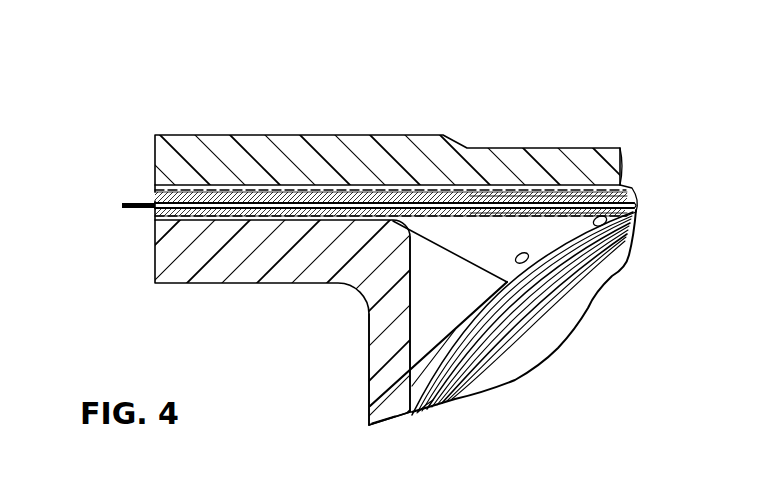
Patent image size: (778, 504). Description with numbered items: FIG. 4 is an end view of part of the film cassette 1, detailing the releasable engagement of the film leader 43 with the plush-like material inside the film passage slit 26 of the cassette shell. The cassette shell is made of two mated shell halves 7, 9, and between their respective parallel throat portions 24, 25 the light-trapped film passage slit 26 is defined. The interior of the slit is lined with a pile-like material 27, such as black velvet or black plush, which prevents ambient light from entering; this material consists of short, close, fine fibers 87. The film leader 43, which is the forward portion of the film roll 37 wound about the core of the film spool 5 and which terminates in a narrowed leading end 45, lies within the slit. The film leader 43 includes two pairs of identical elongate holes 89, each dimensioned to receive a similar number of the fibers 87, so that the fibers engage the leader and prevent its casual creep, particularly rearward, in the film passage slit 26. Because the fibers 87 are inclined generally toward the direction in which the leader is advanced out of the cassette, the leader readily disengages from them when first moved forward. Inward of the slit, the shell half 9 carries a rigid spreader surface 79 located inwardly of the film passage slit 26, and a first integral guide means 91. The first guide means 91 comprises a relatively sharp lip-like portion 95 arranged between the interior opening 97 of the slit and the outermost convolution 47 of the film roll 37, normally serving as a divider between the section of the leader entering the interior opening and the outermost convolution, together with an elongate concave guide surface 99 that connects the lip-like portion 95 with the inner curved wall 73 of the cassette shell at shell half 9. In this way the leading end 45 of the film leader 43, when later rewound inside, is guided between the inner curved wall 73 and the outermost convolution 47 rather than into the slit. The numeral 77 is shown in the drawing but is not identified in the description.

The film cassette 1 is at (377, 116).
The film spool 5 is at (460, 331).
The shell half 7 is at (593, 148).
The shell half 9 is at (368, 424).
The throat portion 24 is at (285, 134).
The throat portion 25 is at (210, 270).
The film passage slit 26 is at (153, 209).
The pile-like material 27 is at (173, 190).
The film roll 37 is at (450, 362).
The film leader 43 is at (540, 206).
The leading end 45 is at (128, 203).
The outermost convolution 47 is at (625, 264).
The inner curved wall 73 is at (370, 407).
The junction 77 is at (432, 402).
The spreader surface 79 is at (451, 295).
The fibers 87 is at (174, 220).
The elongate holes 89 is at (236, 190).
The first guide means 91 is at (491, 234).
The lip-like portion 95 is at (578, 216).
The interior opening 97 is at (549, 193).
The concave guide surface 99 is at (520, 253).